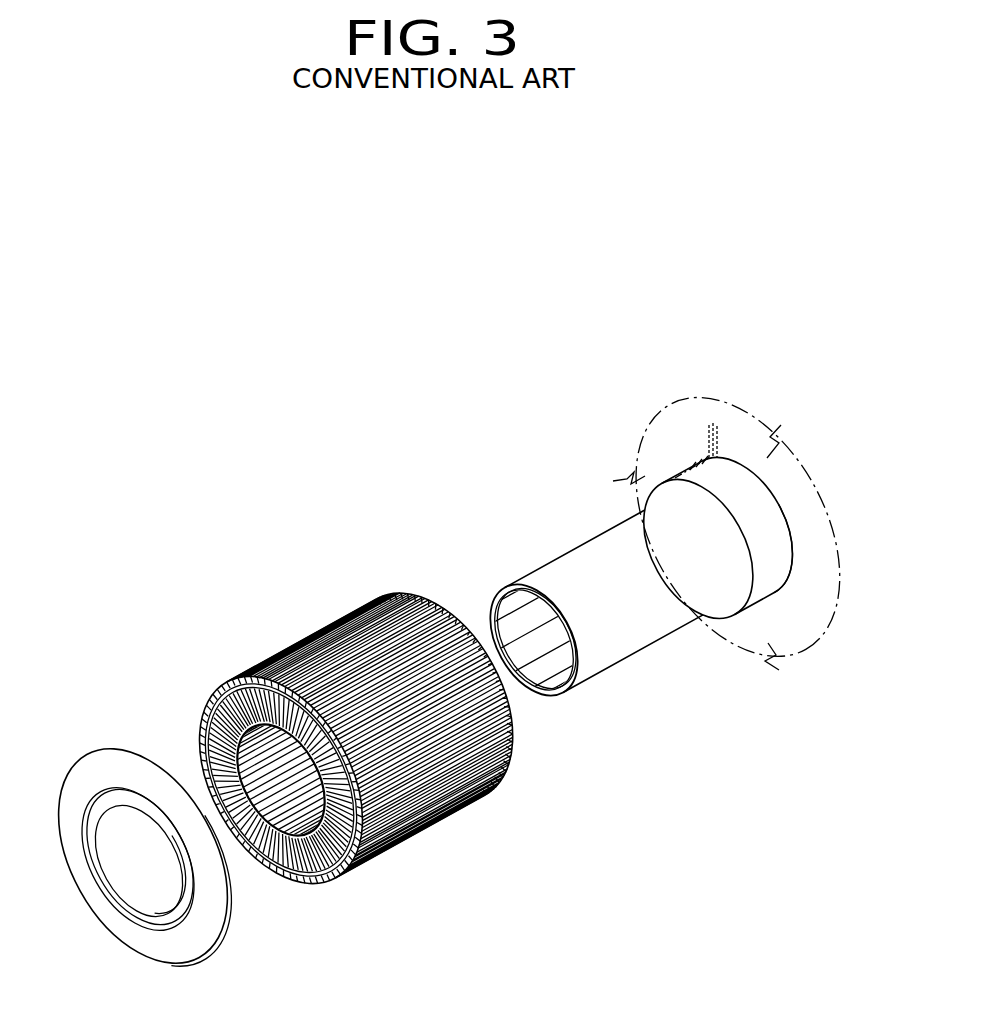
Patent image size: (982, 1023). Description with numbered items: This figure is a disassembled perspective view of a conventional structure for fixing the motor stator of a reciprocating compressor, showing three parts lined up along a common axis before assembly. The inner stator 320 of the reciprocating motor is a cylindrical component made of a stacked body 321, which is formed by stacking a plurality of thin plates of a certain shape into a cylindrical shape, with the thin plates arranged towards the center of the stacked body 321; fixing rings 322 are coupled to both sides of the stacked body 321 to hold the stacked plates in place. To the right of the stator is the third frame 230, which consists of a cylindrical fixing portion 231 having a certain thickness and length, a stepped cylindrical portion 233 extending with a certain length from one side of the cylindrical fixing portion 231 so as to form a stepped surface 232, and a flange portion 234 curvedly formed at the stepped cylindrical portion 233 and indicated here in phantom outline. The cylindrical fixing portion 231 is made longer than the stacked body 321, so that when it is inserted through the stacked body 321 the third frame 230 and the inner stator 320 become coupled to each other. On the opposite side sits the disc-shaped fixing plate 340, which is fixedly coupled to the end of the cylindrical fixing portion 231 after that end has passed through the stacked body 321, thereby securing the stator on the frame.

The third frame 230 is at (676, 567).
The cylindrical fixing portion 231 is at (570, 556).
The stepped surface 232 is at (662, 490).
The stepped cylindrical portion 233 is at (763, 585).
The flange portion 234 is at (742, 437).
The inner stator 320 is at (355, 697).
The stacked body 321 is at (313, 633).
The fixing rings 322 is at (217, 687).
The fixing plate 340 is at (94, 745).